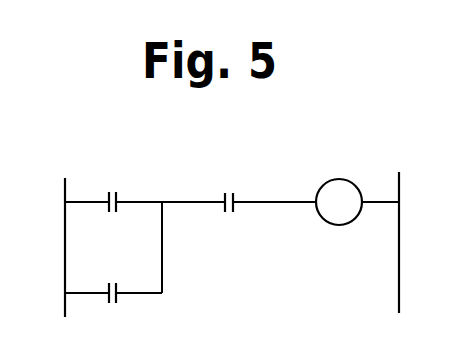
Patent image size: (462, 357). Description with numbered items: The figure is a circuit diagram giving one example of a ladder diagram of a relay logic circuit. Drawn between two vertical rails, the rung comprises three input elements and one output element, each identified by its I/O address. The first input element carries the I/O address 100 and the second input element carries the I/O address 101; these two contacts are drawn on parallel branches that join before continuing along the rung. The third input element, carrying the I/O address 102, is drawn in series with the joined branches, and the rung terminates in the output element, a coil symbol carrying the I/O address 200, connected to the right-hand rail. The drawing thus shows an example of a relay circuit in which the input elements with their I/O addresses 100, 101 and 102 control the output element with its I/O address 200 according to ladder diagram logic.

The I/O address 100 is at (112, 195).
The I/O address 101 is at (111, 291).
The I/O address 102 is at (228, 196).
The I/O address 200 is at (342, 201).